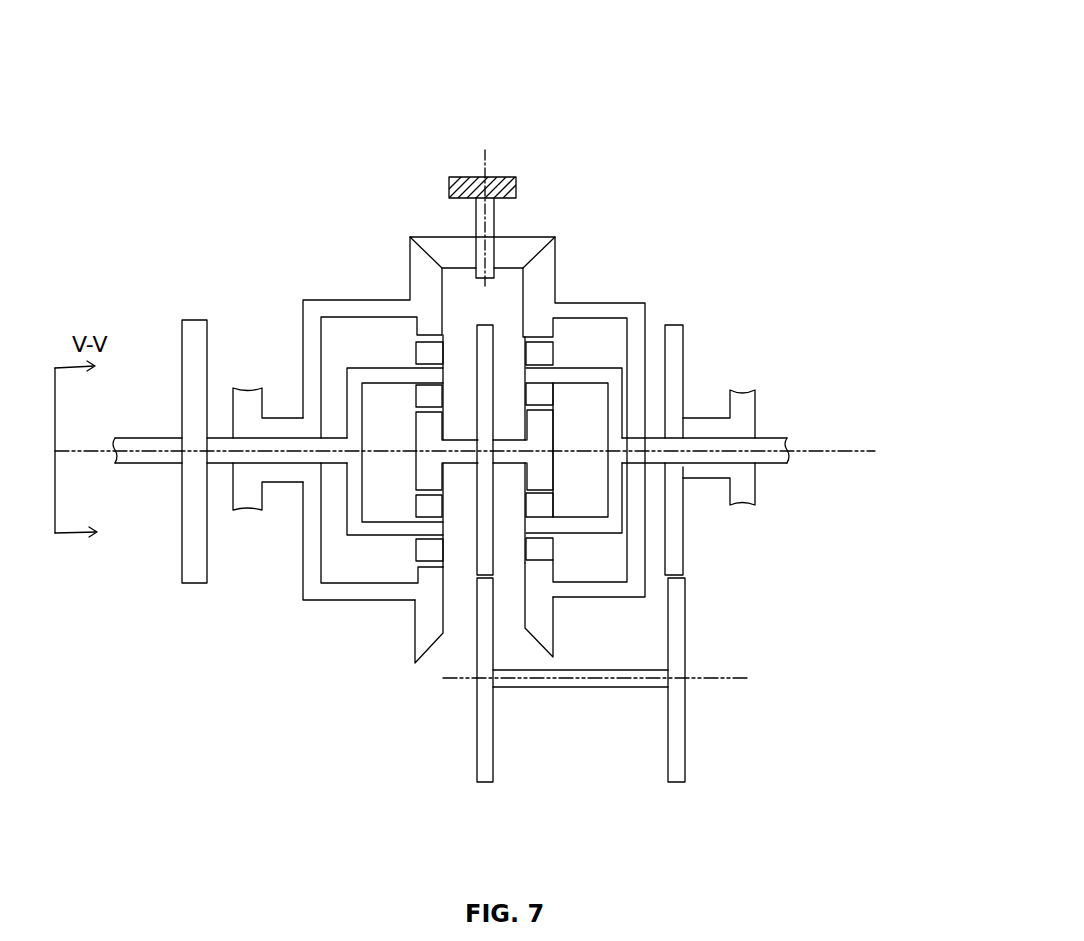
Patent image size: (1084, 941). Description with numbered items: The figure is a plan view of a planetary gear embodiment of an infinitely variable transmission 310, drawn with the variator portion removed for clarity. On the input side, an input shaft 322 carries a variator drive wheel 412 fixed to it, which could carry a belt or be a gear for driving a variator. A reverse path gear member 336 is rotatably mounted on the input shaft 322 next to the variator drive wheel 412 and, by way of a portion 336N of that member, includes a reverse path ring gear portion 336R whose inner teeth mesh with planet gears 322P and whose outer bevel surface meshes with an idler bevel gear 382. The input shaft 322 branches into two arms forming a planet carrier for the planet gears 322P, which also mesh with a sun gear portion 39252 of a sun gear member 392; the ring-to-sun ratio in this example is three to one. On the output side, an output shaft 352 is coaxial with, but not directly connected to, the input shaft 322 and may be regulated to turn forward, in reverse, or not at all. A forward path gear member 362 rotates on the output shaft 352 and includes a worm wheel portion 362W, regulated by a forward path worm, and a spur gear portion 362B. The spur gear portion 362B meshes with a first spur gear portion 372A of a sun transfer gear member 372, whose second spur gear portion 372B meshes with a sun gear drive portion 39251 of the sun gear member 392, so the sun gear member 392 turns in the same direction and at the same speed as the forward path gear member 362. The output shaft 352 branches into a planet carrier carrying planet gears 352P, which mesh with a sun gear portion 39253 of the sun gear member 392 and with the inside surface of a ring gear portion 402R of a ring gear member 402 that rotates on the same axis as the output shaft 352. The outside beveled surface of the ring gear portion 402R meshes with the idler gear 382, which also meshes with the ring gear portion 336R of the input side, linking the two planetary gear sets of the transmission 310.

The infinitely variable transmission 310 is at (654, 87).
The input shaft 322 is at (152, 437).
The planet gears 322P is at (415, 352).
The reverse path gear member 336 is at (323, 625).
The housing hub 336N is at (248, 510).
The reverse path ring gear portion 336R is at (420, 643).
The output shaft 352 is at (768, 438).
The planet gears 352P is at (543, 357).
The forward path gear member 362 is at (715, 498).
The spur gear portion 362B is at (683, 548).
The worm wheel portion 362W is at (755, 503).
The sun transfer gear member 372 is at (598, 708).
The first spur gear portion 372A is at (687, 730).
The second spur gear portion 372B is at (495, 770).
The idler bevel gear 382 is at (522, 245).
The sun gear member 392 is at (455, 422).
The sun gear drive portion 39251 is at (475, 338).
The sun gear portion 39252 is at (395, 451).
The sun gear portion 39253 is at (553, 470).
The ring gear member 402 is at (600, 278).
The ring gear portion 402R is at (540, 273).
The variator drive wheel 412 is at (185, 578).